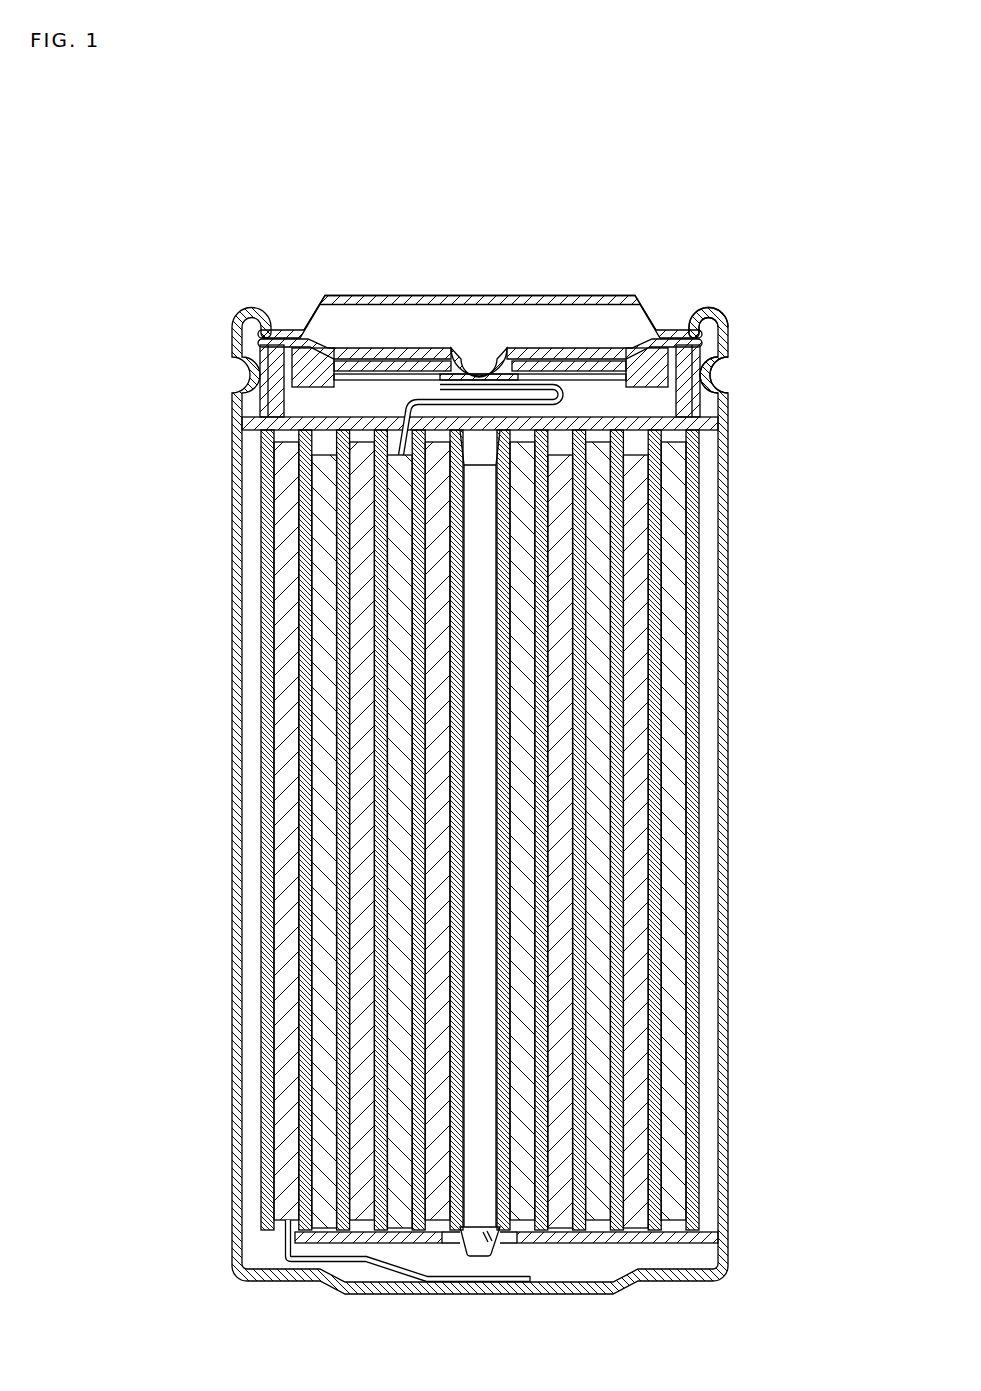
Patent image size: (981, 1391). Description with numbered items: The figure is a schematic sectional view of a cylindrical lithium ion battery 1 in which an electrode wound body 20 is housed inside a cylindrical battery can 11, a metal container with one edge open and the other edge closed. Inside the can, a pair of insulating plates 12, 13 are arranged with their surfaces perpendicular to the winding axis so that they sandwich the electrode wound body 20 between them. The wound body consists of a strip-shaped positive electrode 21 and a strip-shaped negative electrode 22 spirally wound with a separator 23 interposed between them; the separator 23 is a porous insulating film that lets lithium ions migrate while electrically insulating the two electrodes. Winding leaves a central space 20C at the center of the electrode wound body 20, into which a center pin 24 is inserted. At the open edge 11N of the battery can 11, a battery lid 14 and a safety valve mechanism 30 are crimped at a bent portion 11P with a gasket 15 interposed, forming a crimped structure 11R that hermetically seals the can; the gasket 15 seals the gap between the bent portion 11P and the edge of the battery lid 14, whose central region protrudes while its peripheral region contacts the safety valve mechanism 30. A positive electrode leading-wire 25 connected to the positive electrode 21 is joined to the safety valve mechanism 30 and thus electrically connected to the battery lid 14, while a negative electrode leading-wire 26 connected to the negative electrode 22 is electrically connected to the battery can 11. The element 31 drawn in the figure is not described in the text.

The lithium ion battery 1 is at (472, 177).
The battery can 11 is at (722, 609).
The open edge 11N is at (512, 330).
The bent portion 11P is at (717, 307).
The crimped structure 11R is at (734, 313).
The insulating plate 12 is at (243, 430).
The insulating plate 13 is at (670, 1244).
The battery lid 14 is at (380, 295).
The gasket 15 is at (692, 372).
The electrode wound body 20 is at (519, 830).
The central space 20C is at (497, 1232).
The positive electrode 21 is at (637, 716).
The negative electrode 22 is at (673, 770).
The separator 23 is at (692, 824).
The center pin 24 is at (480, 878).
The positive electrode leading-wire 25 is at (404, 403).
The negative electrode leading-wire 26 is at (308, 1262).
The safety valve mechanism 30 is at (463, 348).
The disk plate 31 is at (590, 348).